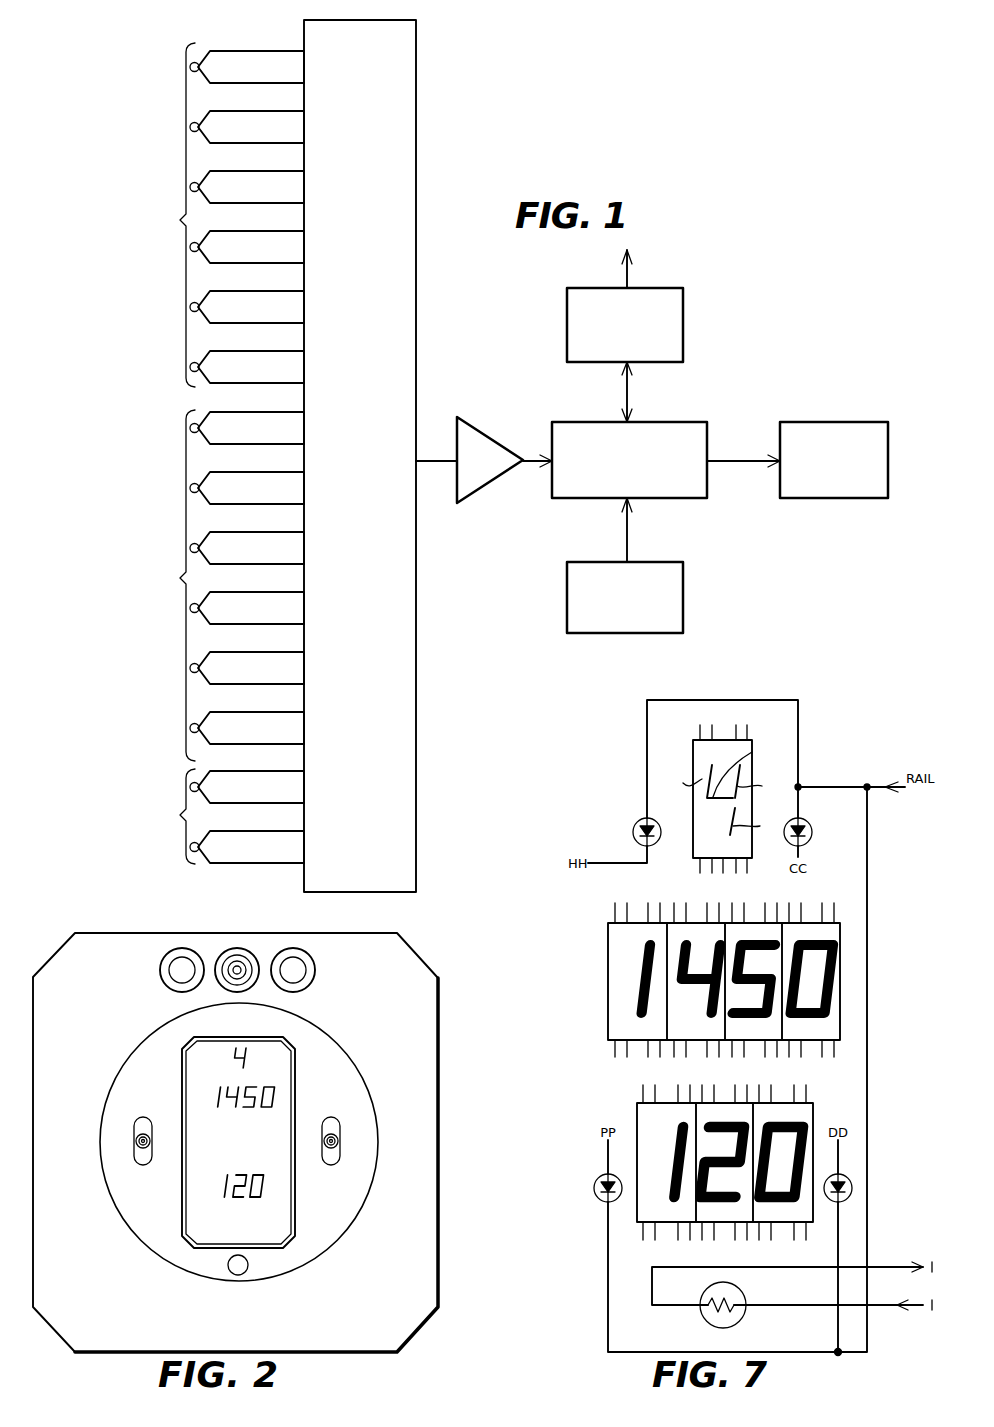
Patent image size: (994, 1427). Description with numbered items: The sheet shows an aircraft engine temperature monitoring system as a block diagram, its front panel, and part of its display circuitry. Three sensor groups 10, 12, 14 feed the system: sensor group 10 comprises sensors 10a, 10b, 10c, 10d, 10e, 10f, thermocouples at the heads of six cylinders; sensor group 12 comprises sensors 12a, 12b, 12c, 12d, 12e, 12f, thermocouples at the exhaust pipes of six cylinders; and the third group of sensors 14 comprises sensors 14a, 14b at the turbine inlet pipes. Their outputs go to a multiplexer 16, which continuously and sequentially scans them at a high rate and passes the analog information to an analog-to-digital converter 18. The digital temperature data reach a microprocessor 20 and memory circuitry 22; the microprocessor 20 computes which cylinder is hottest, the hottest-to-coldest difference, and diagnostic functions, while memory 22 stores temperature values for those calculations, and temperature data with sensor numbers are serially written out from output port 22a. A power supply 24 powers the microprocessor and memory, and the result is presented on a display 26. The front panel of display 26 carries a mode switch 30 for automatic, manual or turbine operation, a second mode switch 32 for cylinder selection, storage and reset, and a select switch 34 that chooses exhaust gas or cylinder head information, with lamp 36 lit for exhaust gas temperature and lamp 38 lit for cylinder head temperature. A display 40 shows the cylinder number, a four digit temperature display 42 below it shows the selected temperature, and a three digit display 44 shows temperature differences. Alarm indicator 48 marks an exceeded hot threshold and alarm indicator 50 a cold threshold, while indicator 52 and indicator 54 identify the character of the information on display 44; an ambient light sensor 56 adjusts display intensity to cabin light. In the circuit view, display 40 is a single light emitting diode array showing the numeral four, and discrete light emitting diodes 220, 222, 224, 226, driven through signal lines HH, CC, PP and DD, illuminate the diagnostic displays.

In FIG. 1, the sensor group 10 is at (170, 145).
In FIG. 1, the sensor 10a is at (199, 67).
In FIG. 1, the sensor 10b is at (199, 127).
In FIG. 1, the sensor 10c is at (199, 187).
In FIG. 1, the sensor 10d is at (199, 247).
In FIG. 1, the sensor 10e is at (199, 307).
In FIG. 1, the sensor 10f is at (199, 367).
In FIG. 1, the sensor group 12 is at (170, 515).
In FIG. 1, the sensor 12a is at (199, 428).
In FIG. 1, the sensor 12b is at (199, 488).
In FIG. 1, the sensor 12c is at (199, 548).
In FIG. 1, the sensor 12d is at (199, 608).
In FIG. 1, the sensor 12e is at (199, 668).
In FIG. 1, the sensor 12f is at (199, 728).
In FIG. 1, the sensor group 14 is at (170, 780).
In FIG. 1, the sensor 14a is at (199, 787).
In FIG. 1, the sensor 14b is at (199, 847).
In FIG. 1, the multiplexer 16 is at (417, 310).
In FIG. 1, the analog-to-digital converter 18 is at (485, 442).
In FIG. 1, the microprocessor 20 is at (673, 438).
In FIG. 1, the memory circuitry 22 is at (673, 318).
In FIG. 1, the output port 22a is at (627, 270).
In FIG. 1, the power supply 24 is at (677, 585).
In FIG. 1, the display 26 is at (848, 440).
In FIG. 2, the display 26 is at (452, 1107).
In FIG. 2, the mode switch 30 is at (135, 1153).
In FIG. 2, the second mode switch 32 is at (339, 1145).
In FIG. 2, the select switch 34 is at (245, 953).
In FIG. 2, the lamp 36 is at (170, 950).
In FIG. 2, the lamp 38 is at (300, 952).
In FIG. 2, the cylinder number display 40 is at (240, 1050).
In FIG. 7, the cylinder number display 40 is at (687, 760).
In FIG. 2, the four digit temperature display 42 is at (278, 1097).
In FIG. 7, the four digit temperature display 42 is at (598, 974).
In FIG. 2, the three digit display 44 is at (263, 1183).
In FIG. 7, the three digit display 44 is at (630, 1122).
In FIG. 2, the alarm indicator 48 is at (190, 1062).
In FIG. 2, the alarm indicator 50 is at (280, 1057).
In FIG. 2, the indicator 52 is at (190, 1235).
In FIG. 2, the indicator 54 is at (278, 1230).
In FIG. 2, the ambient light sensor 56 is at (238, 1275).
In FIG. 7, the ambient light sensor 56 is at (703, 1320).
In FIG. 7, the light emitting diode 220 is at (633, 822).
In FIG. 7, the light emitting diode 222 is at (811, 827).
In FIG. 7, the light emitting diode 224 is at (594, 1190).
In FIG. 7, the light emitting diode 226 is at (852, 1185).